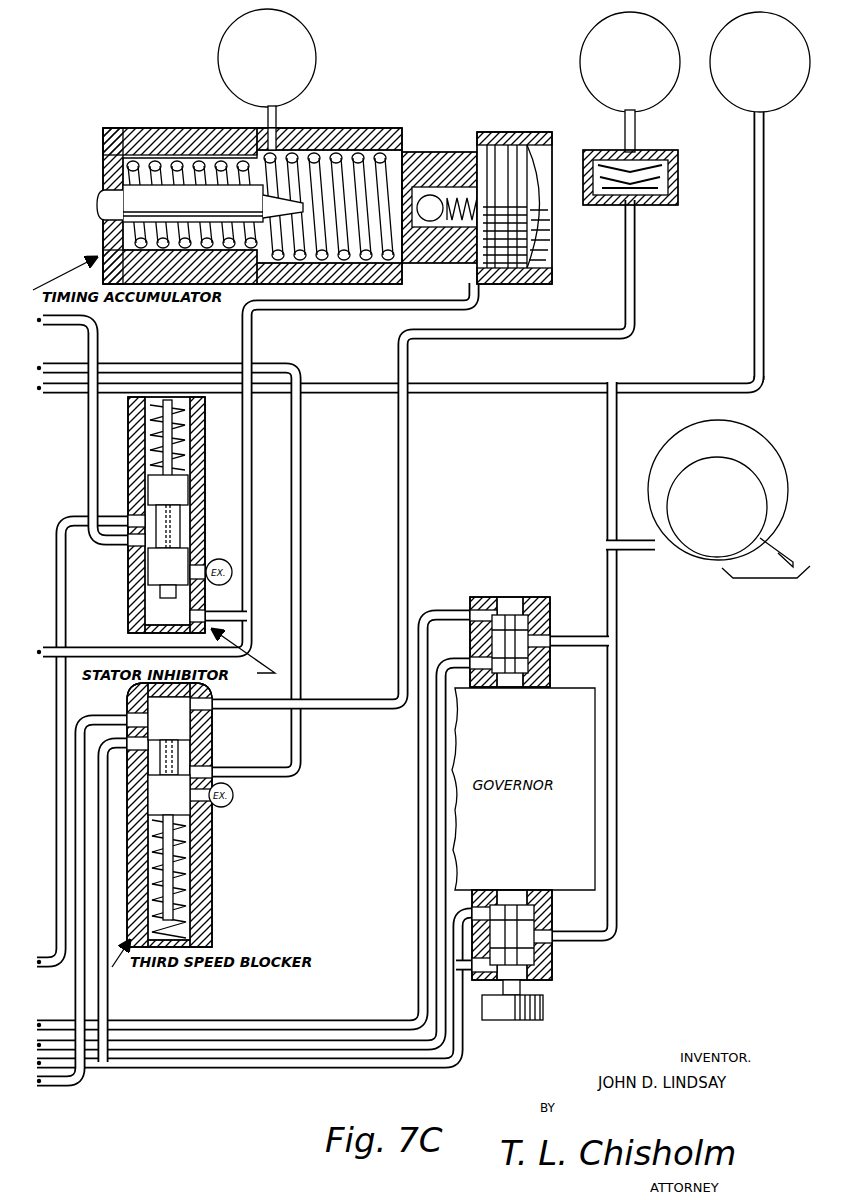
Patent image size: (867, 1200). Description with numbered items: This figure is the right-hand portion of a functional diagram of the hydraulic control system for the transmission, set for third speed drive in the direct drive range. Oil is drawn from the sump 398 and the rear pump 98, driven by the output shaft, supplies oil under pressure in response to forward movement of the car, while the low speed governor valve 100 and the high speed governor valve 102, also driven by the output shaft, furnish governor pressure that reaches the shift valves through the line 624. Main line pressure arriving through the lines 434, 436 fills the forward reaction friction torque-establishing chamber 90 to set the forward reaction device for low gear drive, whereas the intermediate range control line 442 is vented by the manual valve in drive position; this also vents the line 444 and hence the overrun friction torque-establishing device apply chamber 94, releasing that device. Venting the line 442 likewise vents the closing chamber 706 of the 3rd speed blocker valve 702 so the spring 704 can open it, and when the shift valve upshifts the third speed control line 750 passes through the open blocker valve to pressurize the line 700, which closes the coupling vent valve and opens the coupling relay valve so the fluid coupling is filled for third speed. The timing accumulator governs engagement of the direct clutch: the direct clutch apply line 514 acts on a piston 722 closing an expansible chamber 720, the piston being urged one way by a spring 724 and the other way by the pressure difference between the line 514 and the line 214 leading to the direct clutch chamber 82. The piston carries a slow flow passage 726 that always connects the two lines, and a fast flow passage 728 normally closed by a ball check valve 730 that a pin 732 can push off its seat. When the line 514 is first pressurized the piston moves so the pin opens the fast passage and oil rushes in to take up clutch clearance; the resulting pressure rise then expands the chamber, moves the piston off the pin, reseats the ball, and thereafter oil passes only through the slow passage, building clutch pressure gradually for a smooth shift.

The direct clutch chamber 82 is at (307, 66).
The forward reaction friction torque-establishing chamber 90 is at (753, 99).
The overrun friction torque-establishing device apply chamber 94 is at (600, 89).
The rear pump 98 is at (742, 440).
The low speed governor valve 100 is at (545, 956).
The high speed governor valve 102 is at (527, 601).
The line 214 is at (277, 124).
The sump 398 is at (797, 583).
The line 434 is at (93, 392).
The line 436 is at (760, 242).
The intermediate range control line 442 is at (125, 718).
The line 444 is at (636, 282).
The direct clutch apply line 514 is at (375, 308).
The line 624 is at (378, 1025).
The line 700 is at (80, 364).
The 3rd speed blocker valve 702 is at (192, 808).
The spring 704 is at (183, 888).
The closing chamber 706 is at (192, 722).
The expansible chamber 720 is at (325, 158).
The piston 722 is at (426, 154).
The spring 724 is at (132, 160).
The slow flow passage 726 is at (432, 224).
The fast flow passage 728 is at (437, 192).
The ball check valve 730 is at (462, 157).
The pin 732 is at (137, 193).
The third speed control line 750 is at (58, 1066).